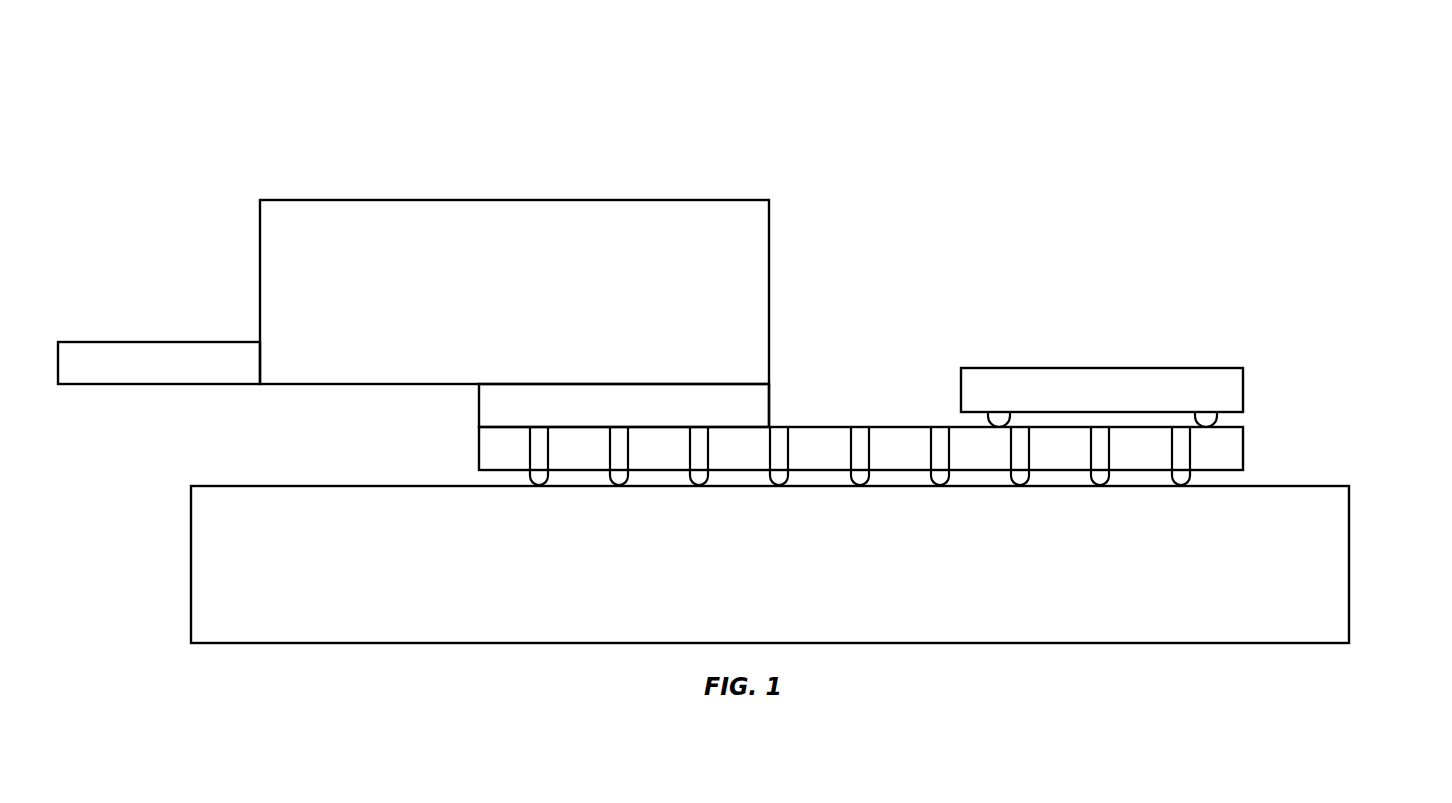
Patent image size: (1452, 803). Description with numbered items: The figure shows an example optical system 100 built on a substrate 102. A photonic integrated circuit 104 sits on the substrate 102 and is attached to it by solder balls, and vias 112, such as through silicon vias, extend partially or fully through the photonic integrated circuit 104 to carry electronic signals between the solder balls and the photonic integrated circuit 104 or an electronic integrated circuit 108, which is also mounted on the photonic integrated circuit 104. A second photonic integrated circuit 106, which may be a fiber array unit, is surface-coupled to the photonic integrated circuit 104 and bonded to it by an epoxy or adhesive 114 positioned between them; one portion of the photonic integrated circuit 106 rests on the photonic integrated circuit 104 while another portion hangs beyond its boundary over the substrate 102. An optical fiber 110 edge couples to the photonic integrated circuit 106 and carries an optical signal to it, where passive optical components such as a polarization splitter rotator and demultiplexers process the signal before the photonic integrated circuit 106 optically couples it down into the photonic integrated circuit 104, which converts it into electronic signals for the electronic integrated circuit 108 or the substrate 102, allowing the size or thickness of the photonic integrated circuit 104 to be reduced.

The optical system 100 is at (788, 79).
The substrate 102 is at (1349, 570).
The photonic integrated circuit 104 is at (1243, 449).
The photonic integrated circuit 106 is at (769, 293).
The electronic integrated circuit 108 is at (1243, 383).
The optical fiber 110 is at (107, 384).
The vias 112 is at (530, 442).
The epoxy or adhesive 114 is at (479, 401).